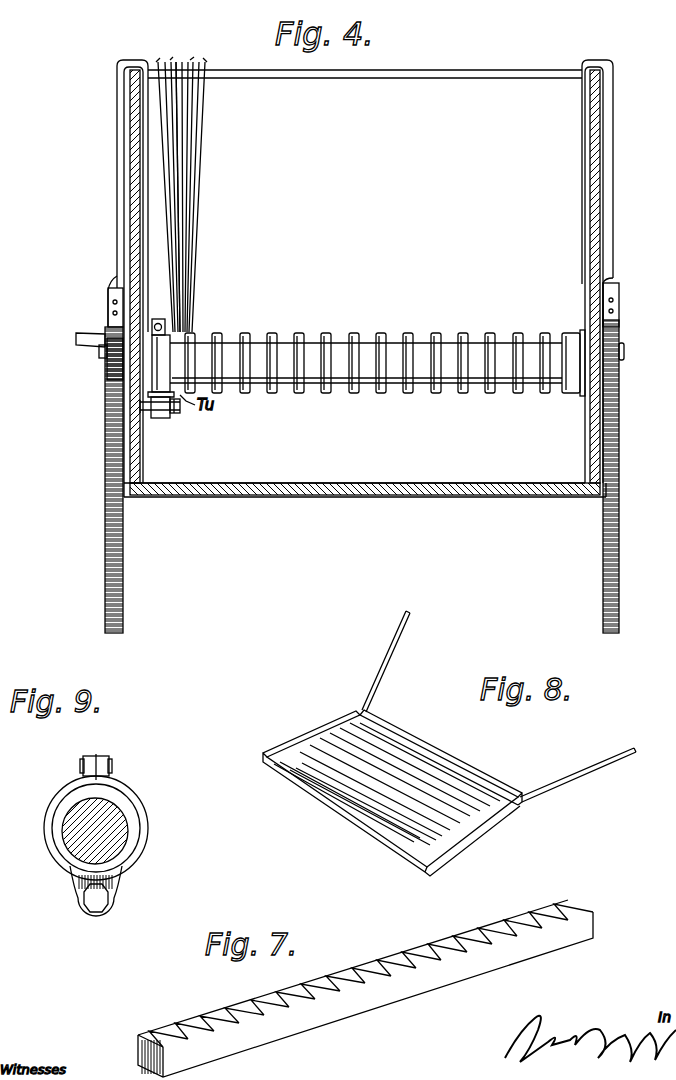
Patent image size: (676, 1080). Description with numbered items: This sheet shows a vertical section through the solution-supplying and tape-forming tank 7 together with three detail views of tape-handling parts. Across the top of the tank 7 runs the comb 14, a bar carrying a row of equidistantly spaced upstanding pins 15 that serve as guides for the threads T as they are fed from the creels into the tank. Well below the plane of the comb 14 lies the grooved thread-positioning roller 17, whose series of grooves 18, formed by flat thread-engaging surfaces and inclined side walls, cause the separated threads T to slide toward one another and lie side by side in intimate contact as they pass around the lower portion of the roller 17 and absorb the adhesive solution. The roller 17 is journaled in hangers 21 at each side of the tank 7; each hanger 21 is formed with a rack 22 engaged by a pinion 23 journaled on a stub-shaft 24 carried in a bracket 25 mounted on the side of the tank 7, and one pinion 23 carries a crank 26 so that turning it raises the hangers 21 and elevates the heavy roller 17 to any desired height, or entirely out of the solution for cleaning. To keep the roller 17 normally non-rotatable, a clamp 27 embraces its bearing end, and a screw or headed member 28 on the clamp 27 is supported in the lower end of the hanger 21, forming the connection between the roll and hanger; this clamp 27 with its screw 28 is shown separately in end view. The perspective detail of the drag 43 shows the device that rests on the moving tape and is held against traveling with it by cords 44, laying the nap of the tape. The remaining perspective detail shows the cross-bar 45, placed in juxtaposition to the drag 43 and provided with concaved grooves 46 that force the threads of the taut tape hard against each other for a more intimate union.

In FIG. 4, the tank 7 is at (441, 453).
In FIG. 4, the comb 14 is at (246, 70).
In FIG. 4, the pins 15 is at (203, 62).
In FIG. 4, the threads T is at (197, 176).
In FIG. 4, the grooved roller 17 is at (398, 340).
In FIG. 9, the grooved roller 17 is at (116, 830).
In FIG. 4, the grooves 18 is at (506, 334).
In FIG. 4, the hangers 21 is at (118, 234).
In FIG. 4, the racks 22 is at (105, 412).
In FIG. 4, the pinions 23 is at (100, 361).
In FIG. 4, the stub-shafts 24 is at (76, 340).
In FIG. 4, the brackets 25 is at (105, 381).
In FIG. 4, the crank 26 is at (94, 326).
In FIG. 4, the clamp 27 is at (157, 358).
In FIG. 9, the clamp 27 is at (128, 782).
In FIG. 4, the screw 28 is at (179, 407).
In FIG. 9, the screw 28 is at (102, 896).
In FIG. 8, the drag 43 is at (432, 868).
In FIG. 8, the cords 44 is at (578, 778).
In FIG. 7, the cross-bar 45 is at (597, 933).
In FIG. 7, the grooves 46 is at (446, 950).